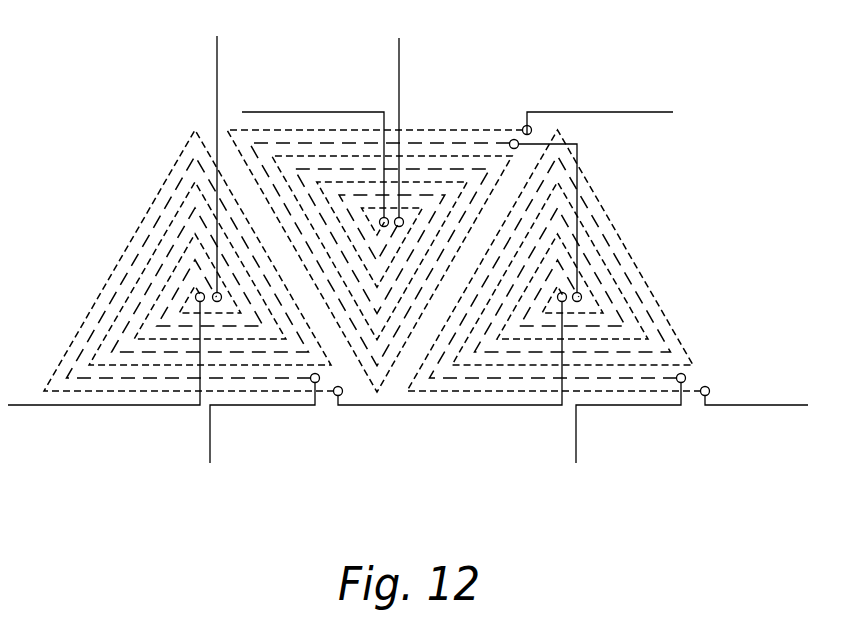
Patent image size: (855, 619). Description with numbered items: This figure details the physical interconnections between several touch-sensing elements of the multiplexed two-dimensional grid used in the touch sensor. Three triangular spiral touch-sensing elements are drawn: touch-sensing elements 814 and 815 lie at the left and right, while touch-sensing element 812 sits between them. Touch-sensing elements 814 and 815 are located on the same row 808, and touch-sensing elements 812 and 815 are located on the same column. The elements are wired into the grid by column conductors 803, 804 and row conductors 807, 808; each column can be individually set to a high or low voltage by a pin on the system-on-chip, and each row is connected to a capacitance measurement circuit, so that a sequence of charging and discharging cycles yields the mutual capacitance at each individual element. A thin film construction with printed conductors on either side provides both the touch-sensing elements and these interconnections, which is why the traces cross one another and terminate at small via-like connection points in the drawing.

The column 803 is at (216, 72).
The column 804 is at (400, 72).
The row 807 is at (304, 110).
The row 808 is at (83, 405).
The touch-sensing element 812 is at (487, 111).
The touch-sensing element 814 is at (100, 231).
The touch-sensing element 815 is at (650, 232).